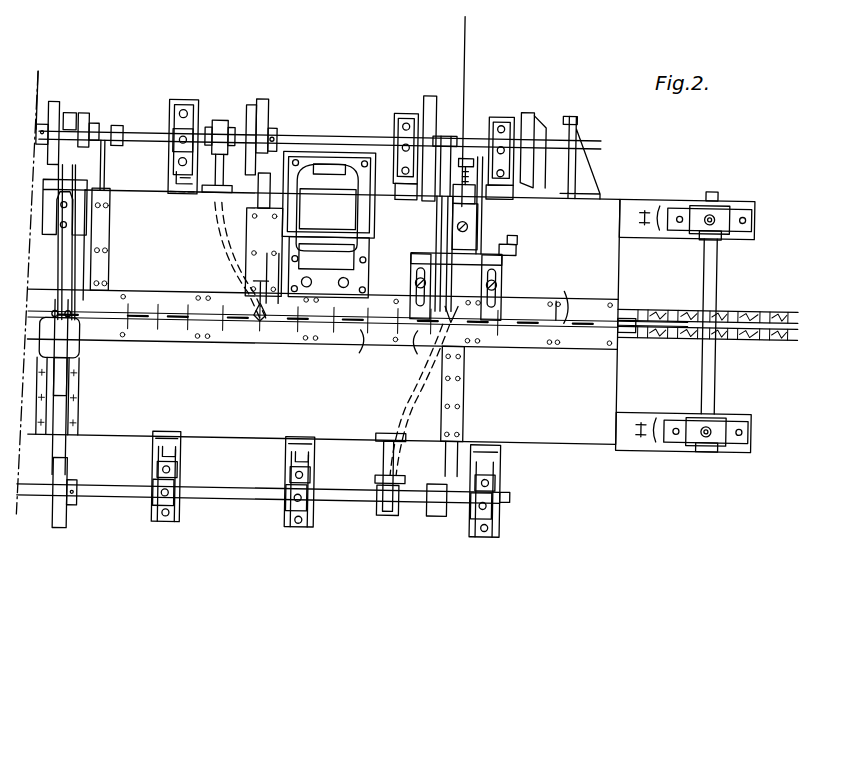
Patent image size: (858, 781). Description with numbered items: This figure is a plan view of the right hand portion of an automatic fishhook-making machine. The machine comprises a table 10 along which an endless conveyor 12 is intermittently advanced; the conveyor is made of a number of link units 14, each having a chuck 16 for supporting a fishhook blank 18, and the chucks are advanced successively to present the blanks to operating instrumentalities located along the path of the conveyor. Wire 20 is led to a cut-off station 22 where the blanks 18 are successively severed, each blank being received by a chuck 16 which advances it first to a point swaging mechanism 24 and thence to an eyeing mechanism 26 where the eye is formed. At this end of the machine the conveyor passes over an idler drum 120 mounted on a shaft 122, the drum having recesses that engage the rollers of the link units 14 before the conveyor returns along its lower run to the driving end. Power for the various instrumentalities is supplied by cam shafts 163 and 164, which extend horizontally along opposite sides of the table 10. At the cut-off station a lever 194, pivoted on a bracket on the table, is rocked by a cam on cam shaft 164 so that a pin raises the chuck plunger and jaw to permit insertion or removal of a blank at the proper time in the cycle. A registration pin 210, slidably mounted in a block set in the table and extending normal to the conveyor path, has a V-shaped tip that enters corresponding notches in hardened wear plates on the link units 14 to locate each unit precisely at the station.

The table 10 is at (568, 437).
The endless conveyor 12 is at (625, 312).
The link units 14 is at (564, 317).
The chuck 16 is at (528, 312).
The fishhook blank 18 is at (412, 333).
The wire 20 is at (463, 70).
The cut-off station 22 is at (452, 298).
The point swaging mechanism 24 is at (345, 239).
The eyeing mechanism 26 is at (70, 320).
The idler drum 120 is at (760, 308).
The shaft 122 is at (722, 275).
The cam shaft 163 is at (145, 131).
The cam shaft 164 is at (250, 497).
The lever 194 is at (220, 226).
The registration pin 210 is at (113, 290).